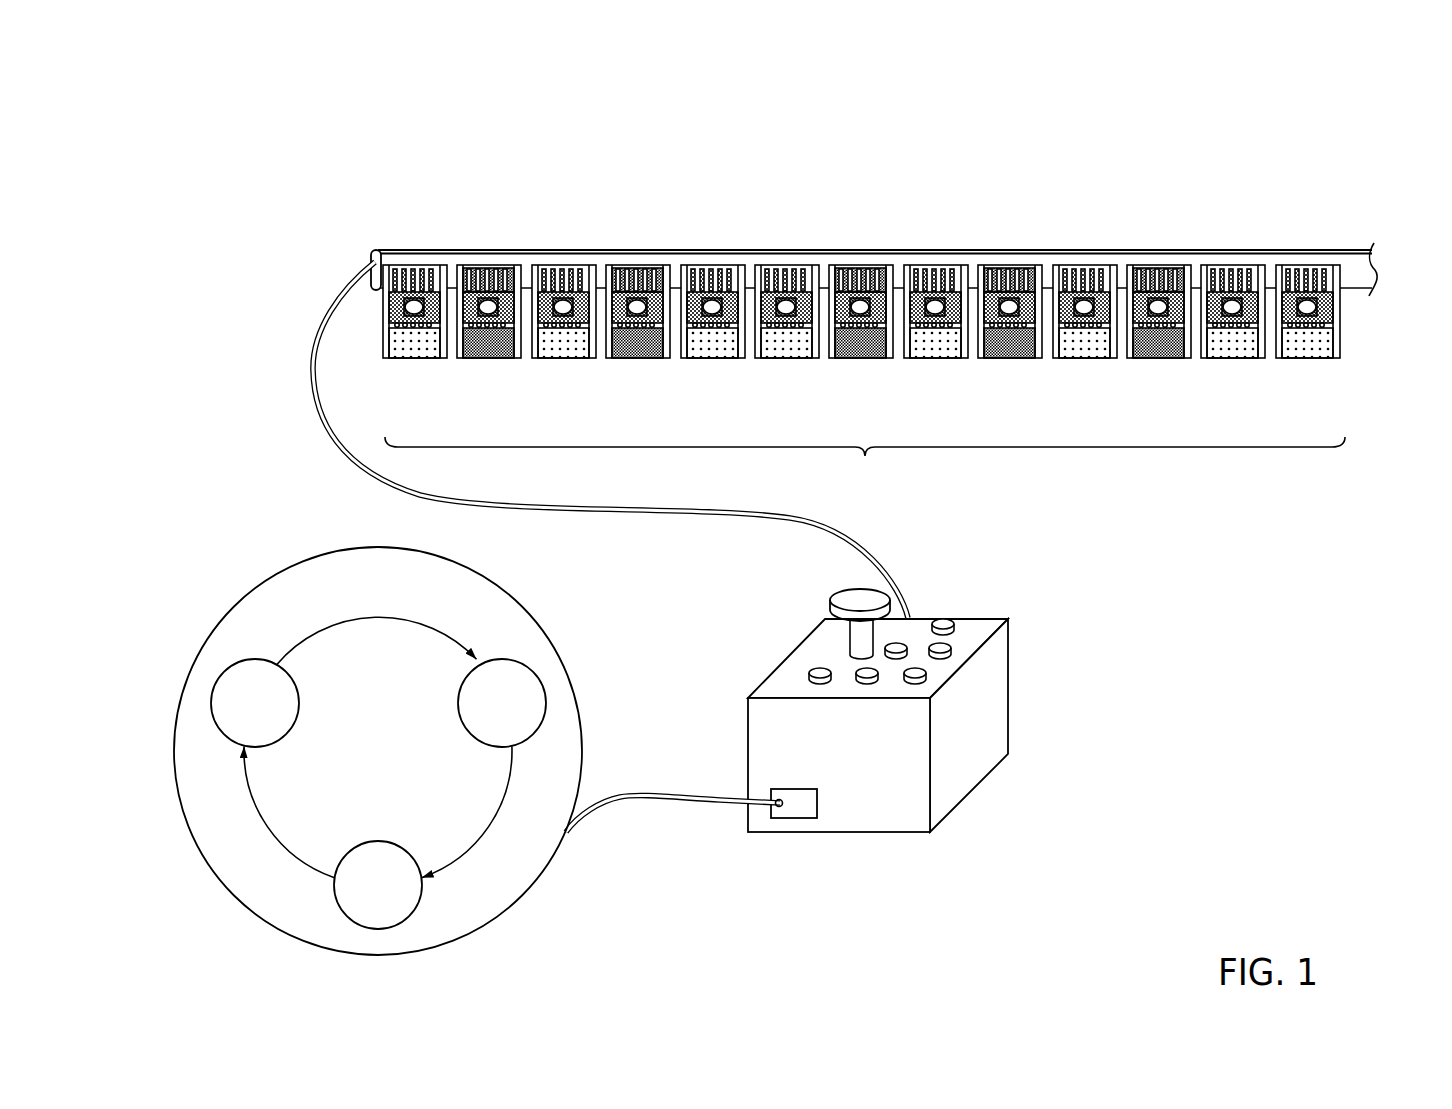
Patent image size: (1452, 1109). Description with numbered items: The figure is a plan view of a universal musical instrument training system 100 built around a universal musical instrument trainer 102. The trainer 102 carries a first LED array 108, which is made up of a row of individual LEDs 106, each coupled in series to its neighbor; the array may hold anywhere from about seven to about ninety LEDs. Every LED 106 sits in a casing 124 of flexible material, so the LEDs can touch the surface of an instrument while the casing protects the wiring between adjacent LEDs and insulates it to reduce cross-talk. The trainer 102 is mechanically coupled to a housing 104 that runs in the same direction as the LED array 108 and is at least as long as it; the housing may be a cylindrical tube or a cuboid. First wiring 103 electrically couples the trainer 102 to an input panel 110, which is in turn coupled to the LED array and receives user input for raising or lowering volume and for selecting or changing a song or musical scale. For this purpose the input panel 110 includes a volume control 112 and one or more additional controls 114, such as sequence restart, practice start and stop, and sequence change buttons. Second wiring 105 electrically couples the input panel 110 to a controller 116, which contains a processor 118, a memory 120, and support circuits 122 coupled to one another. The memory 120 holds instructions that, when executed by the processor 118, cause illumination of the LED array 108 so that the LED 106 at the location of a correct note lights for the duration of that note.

The universal musical instrument training system 100 is at (270, 105).
The universal musical instrument trainer 102 is at (375, 228).
The first wiring 103 is at (308, 373).
The housing 104 is at (1200, 250).
The second wiring 105 is at (666, 800).
The LED 106 is at (718, 362).
The first LED array 108 is at (865, 466).
The input panel 110 is at (748, 740).
The volume control 112 is at (862, 603).
The additional controls 114 is at (973, 634).
The controller 116 is at (237, 535).
The processor 118 is at (232, 718).
The memory 120 is at (479, 718).
The support circuits 122 is at (355, 900).
The casing 124 is at (1022, 270).